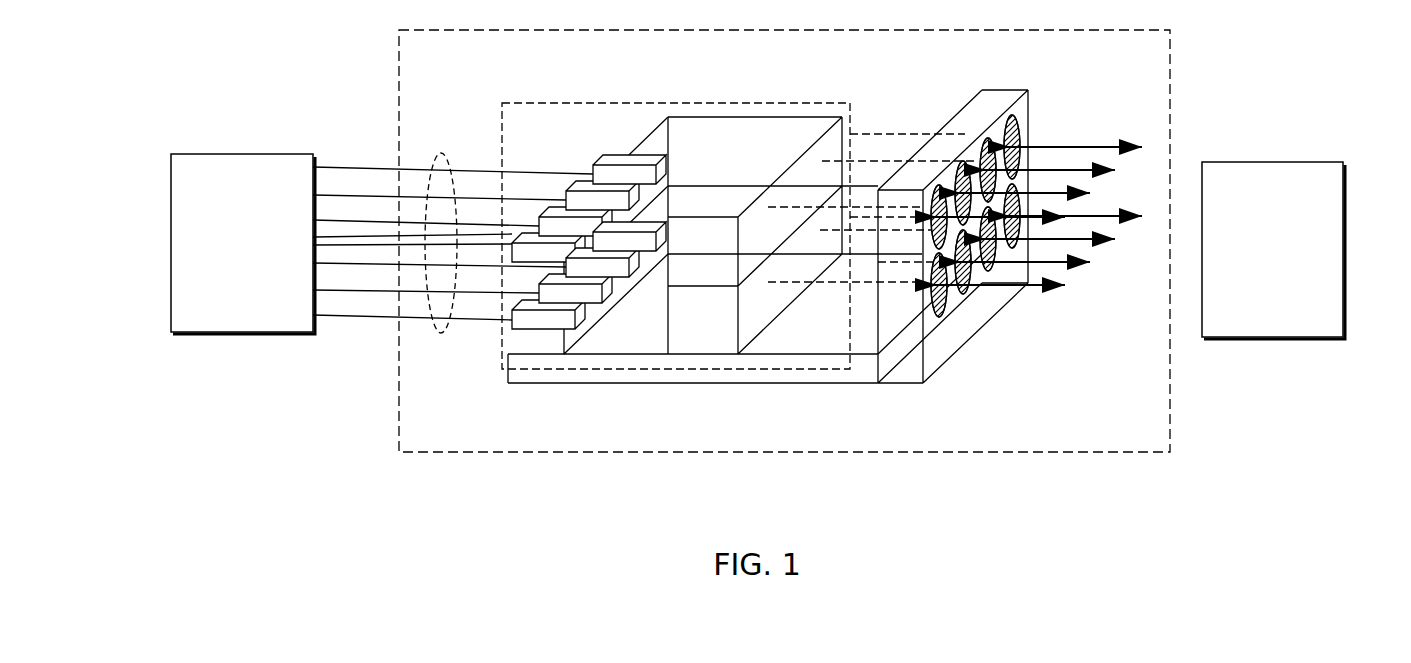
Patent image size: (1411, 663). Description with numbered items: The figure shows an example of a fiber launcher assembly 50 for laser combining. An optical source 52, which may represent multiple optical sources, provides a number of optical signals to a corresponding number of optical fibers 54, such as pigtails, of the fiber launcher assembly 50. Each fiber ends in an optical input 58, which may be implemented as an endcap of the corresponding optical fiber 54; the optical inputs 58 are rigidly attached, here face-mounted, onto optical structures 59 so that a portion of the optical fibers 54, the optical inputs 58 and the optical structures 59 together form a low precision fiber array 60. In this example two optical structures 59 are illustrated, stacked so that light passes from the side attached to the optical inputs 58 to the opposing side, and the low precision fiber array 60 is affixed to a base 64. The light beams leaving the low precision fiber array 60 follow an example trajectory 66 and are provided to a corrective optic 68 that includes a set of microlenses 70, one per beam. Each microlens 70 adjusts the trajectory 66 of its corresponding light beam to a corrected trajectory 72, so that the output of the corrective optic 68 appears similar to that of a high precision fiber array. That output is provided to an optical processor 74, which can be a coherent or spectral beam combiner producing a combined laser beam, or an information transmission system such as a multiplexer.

The fiber launcher assembly 50 is at (399, 387).
The optical source 52 is at (171, 241).
The optical fibers 54 is at (448, 156).
The optical inputs 58 is at (553, 213).
The optical structures 59 is at (737, 117).
The low precision fiber array 60 is at (676, 103).
The base 64 is at (564, 384).
The trajectory 66 is at (862, 160).
The corrective optic 68 is at (972, 338).
The microlenses 70 is at (1011, 113).
The corrected trajectory 72 is at (1062, 145).
The optical processor 74 is at (1345, 250).